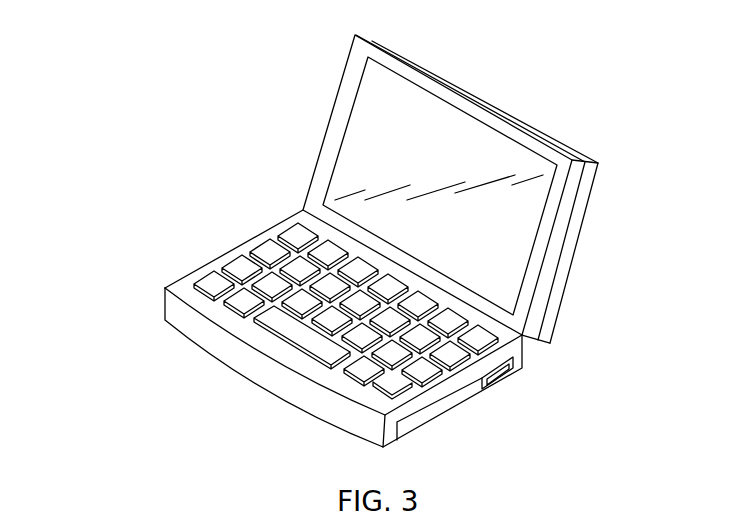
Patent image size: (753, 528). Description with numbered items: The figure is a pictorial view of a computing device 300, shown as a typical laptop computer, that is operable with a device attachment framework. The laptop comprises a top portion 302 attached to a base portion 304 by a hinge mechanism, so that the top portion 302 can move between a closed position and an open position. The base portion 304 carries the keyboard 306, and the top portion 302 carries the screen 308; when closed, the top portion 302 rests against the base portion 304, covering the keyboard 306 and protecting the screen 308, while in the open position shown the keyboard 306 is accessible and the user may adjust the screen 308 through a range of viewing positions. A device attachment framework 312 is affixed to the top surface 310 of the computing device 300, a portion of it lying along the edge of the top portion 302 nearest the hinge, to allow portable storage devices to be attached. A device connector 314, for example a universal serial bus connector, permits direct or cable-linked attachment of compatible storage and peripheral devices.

The computing device 300 is at (201, 89).
The top portion 302 is at (480, 101).
The base portion 304 is at (265, 396).
The keyboard 306 is at (240, 268).
The screen 308 is at (373, 100).
The top surface 310 is at (549, 135).
The device attachment framework 312 is at (578, 231).
The device connector 314 is at (513, 365).